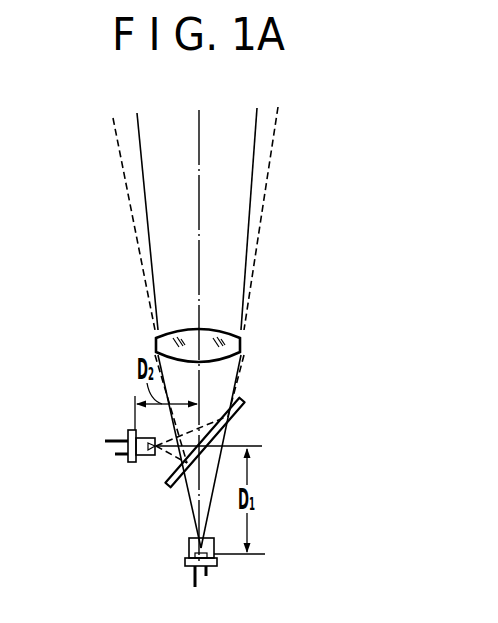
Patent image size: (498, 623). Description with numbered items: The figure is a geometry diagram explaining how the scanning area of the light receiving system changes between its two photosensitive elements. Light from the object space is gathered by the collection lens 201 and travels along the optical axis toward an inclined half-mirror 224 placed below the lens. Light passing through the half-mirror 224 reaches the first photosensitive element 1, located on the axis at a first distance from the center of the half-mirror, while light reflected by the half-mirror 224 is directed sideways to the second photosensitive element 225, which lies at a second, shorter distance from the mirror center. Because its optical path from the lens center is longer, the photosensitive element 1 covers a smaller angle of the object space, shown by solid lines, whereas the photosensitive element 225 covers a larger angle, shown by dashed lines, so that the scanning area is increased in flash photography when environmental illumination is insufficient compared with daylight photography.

The photosensitive element 1 is at (188, 550).
The collection lens 201 is at (240, 342).
The half-mirror 224 is at (243, 402).
The photosensitive element 225 is at (143, 462).